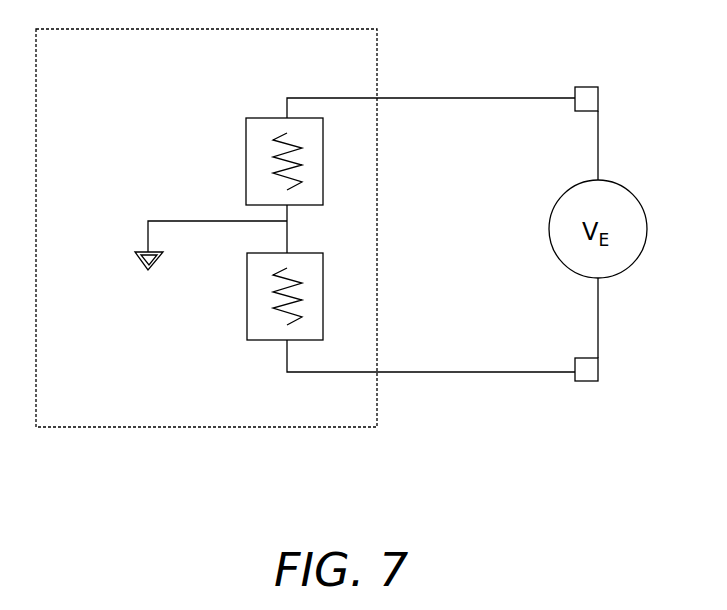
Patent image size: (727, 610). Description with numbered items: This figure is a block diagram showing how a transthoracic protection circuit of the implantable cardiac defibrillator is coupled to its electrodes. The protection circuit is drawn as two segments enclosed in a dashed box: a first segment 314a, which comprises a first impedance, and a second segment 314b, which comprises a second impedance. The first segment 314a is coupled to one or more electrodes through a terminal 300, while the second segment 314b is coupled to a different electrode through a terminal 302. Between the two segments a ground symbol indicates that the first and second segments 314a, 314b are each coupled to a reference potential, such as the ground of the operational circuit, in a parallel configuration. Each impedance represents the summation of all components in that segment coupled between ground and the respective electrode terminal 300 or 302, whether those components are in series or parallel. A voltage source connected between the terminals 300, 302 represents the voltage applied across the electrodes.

The terminal 300 is at (600, 100).
The terminal 302 is at (600, 372).
The first segment 314a is at (246, 165).
The second segment 314b is at (247, 300).